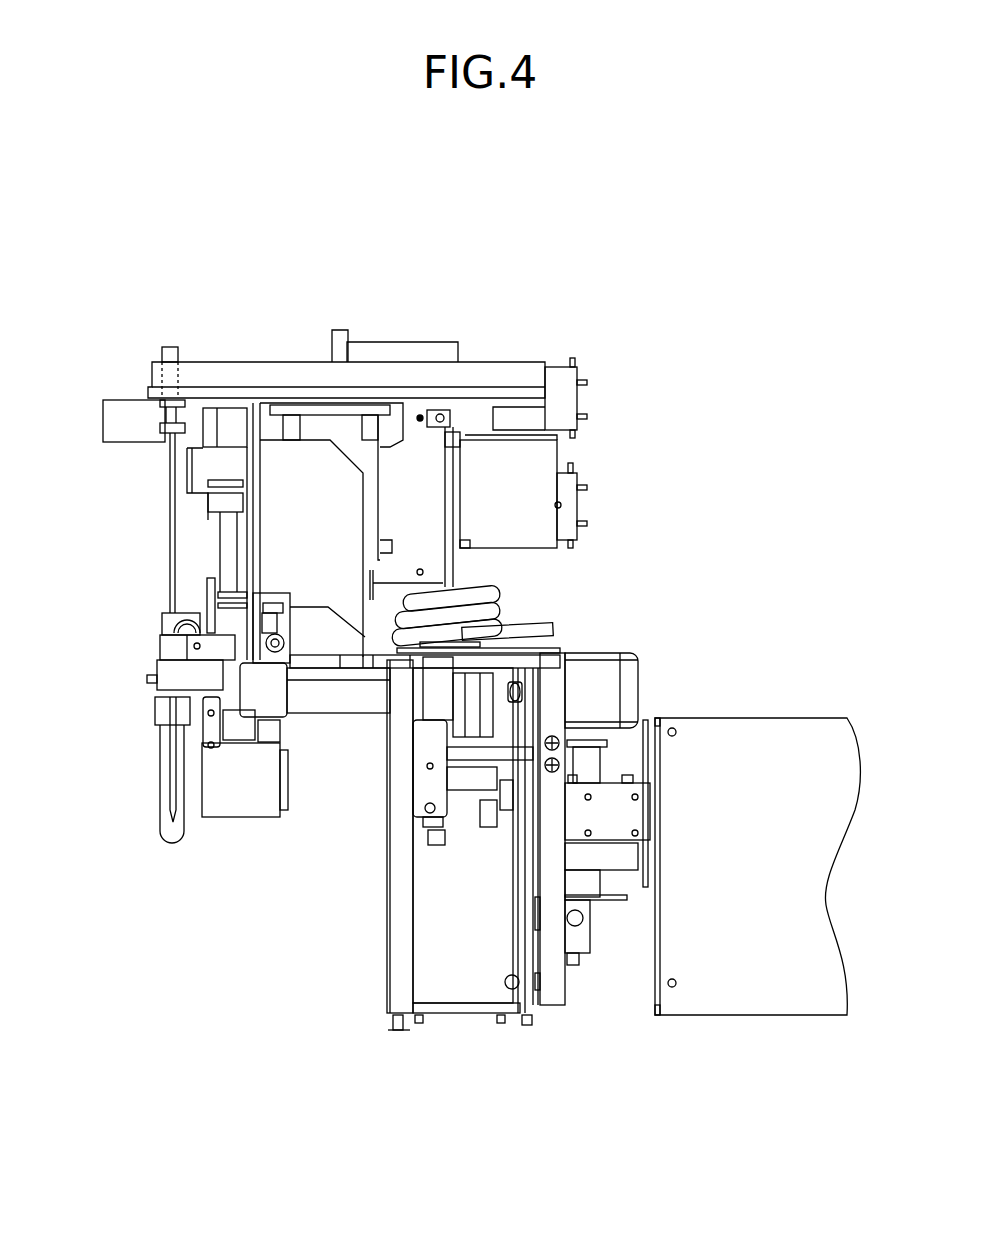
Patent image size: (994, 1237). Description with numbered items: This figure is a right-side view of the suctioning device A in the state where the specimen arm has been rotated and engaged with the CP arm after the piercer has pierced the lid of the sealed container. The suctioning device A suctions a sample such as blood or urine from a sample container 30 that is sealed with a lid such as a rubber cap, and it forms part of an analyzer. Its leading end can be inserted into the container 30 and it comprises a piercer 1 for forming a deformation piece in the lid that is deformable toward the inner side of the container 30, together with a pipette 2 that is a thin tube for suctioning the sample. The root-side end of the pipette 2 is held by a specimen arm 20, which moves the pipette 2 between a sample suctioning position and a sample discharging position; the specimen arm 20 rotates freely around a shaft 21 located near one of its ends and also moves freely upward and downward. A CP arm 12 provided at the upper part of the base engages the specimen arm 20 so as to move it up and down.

The suctioning device A is at (682, 365).
The specimen arm 20 is at (192, 370).
The CP arm 12 is at (125, 415).
The pipette 2 is at (172, 522).
The shaft 21 is at (453, 523).
The piercer 1 is at (160, 735).
The sample container 30 is at (175, 815).